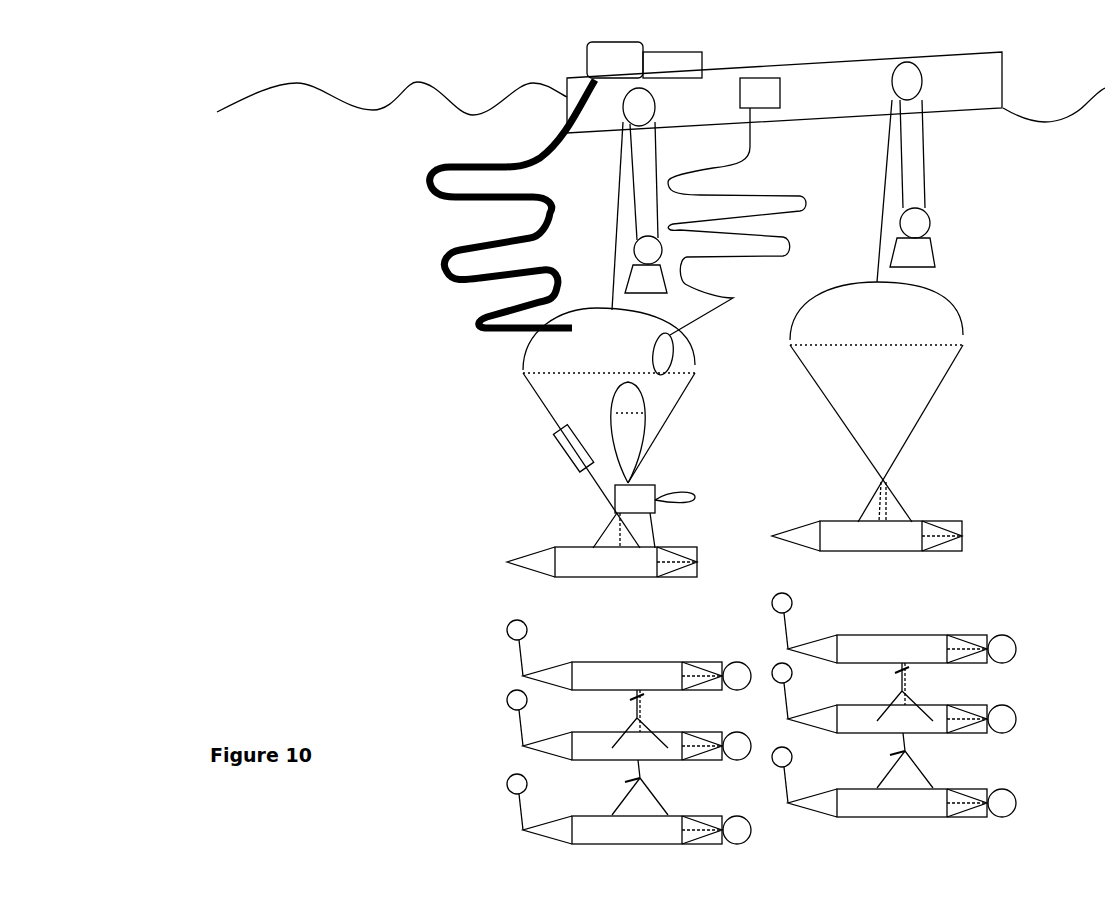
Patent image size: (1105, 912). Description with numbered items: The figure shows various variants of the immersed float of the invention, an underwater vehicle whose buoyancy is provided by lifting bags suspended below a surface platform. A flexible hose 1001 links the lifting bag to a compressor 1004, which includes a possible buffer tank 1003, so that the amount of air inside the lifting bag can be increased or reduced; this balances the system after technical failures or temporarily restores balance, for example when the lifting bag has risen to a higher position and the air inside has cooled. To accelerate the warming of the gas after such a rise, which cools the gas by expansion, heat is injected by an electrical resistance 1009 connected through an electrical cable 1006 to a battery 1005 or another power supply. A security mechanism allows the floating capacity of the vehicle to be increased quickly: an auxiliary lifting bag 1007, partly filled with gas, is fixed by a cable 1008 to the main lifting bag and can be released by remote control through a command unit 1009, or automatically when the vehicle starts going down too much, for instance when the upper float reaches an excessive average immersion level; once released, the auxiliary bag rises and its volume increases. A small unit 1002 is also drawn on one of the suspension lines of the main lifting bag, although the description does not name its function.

The flexible hose 1001 is at (430, 188).
The sensor 1002 is at (568, 452).
The buffer tank 1003 is at (586, 72).
The compressor 1004 is at (690, 58).
The battery 1005 is at (780, 78).
The electrical cable 1006 is at (750, 147).
The auxiliary lifting bag 1007 is at (650, 417).
The cable 1008 is at (657, 478).
The electrical resistance 1009 is at (690, 363).